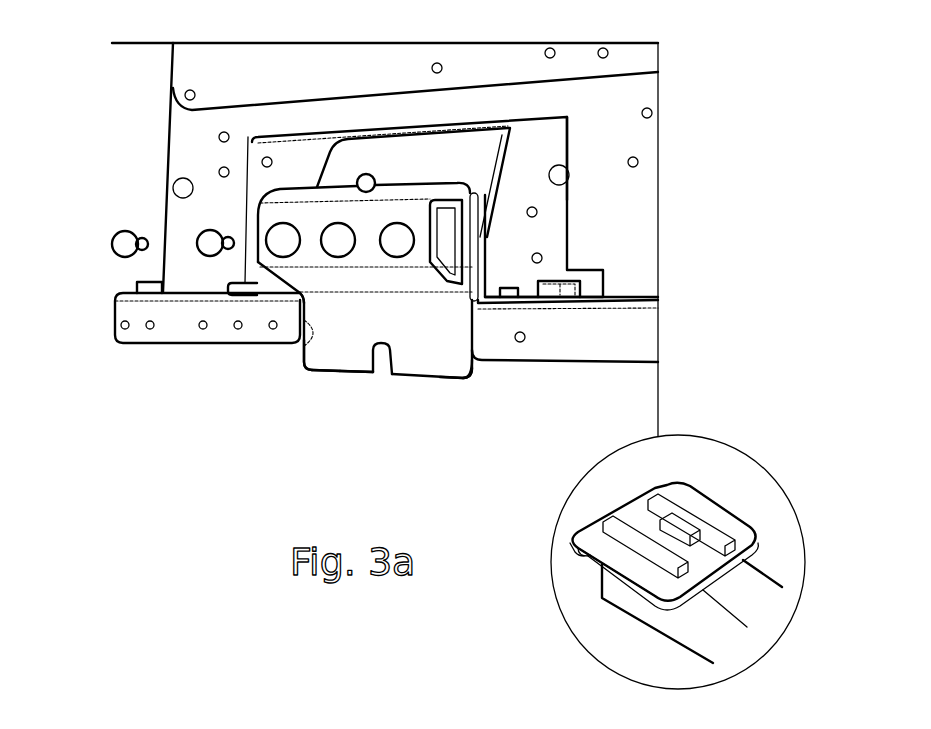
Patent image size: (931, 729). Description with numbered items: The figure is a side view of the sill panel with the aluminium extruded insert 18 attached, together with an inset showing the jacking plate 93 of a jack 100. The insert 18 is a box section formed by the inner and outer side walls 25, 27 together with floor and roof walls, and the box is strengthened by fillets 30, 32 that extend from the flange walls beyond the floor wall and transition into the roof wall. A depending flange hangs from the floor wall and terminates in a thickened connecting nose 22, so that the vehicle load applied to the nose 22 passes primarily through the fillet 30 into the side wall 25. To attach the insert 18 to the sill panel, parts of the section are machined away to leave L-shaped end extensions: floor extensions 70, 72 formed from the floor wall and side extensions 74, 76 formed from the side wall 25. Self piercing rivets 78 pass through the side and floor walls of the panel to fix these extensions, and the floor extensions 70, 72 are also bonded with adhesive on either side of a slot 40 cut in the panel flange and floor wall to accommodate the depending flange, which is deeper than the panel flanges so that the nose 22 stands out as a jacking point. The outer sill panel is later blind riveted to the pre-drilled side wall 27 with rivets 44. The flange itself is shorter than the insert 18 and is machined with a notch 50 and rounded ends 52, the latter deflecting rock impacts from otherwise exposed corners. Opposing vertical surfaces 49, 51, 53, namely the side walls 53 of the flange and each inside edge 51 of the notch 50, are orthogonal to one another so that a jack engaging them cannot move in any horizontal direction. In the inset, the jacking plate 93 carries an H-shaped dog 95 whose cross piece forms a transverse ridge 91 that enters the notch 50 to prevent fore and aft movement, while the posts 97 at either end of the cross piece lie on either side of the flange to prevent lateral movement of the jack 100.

The insert 18 is at (238, 369).
The nose 22 is at (428, 386).
The inner side wall 25 is at (507, 190).
The outer side wall 27 is at (428, 225).
The fillet 30 is at (488, 250).
The fillet 32 is at (454, 235).
The slot 40 is at (300, 348).
The rivets 44 is at (280, 238).
The opposing vertical surface 49 is at (300, 358).
The notch 50 is at (388, 372).
The inside edge 51 is at (372, 362).
The rounded ends 52 is at (302, 365).
The side walls 53 is at (345, 360).
The end extension 70 is at (579, 287).
The end extension 72 is at (242, 292).
The side extension 74 is at (263, 173).
The side extension 76 is at (568, 135).
The self piercing rivets 78 is at (285, 195).
The transverse ridge 91 is at (623, 495).
The jacking plate 93 is at (745, 537).
The H-shaped dog 95 is at (610, 552).
The posts 97 is at (660, 498).
The jack 100 is at (702, 484).